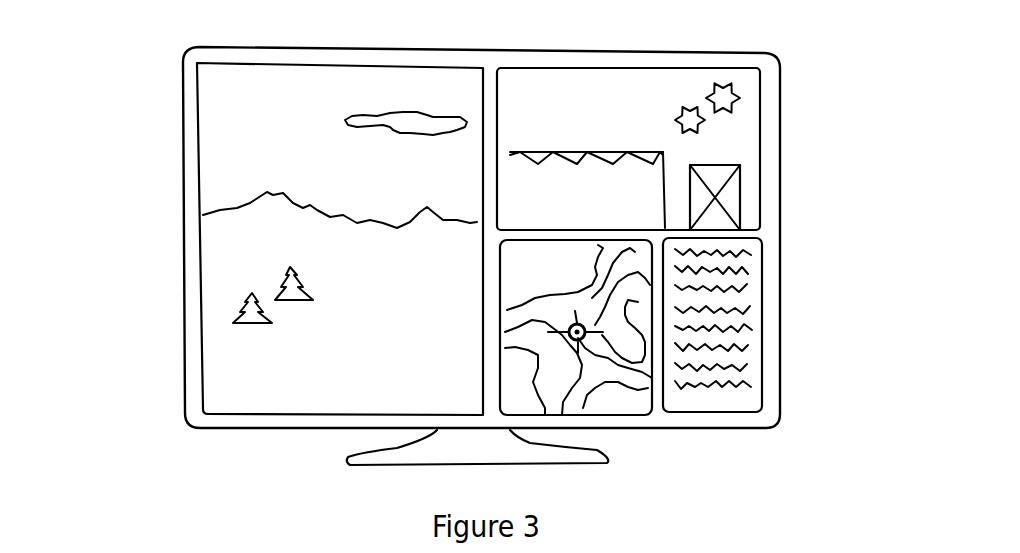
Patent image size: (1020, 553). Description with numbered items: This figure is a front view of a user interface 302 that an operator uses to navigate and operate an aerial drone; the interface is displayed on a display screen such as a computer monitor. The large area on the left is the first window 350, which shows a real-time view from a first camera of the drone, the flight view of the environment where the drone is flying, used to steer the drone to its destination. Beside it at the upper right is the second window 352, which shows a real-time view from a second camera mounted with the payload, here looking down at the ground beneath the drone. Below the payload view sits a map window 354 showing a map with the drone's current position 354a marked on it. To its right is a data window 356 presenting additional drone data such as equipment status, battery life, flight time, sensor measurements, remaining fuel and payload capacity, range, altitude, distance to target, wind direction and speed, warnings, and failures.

The user interface 302 is at (150, 157).
The first window 350 is at (243, 262).
The second window 352 is at (623, 90).
The map window 354 is at (713, 367).
The current position 354a is at (603, 332).
The data window 356 is at (750, 262).